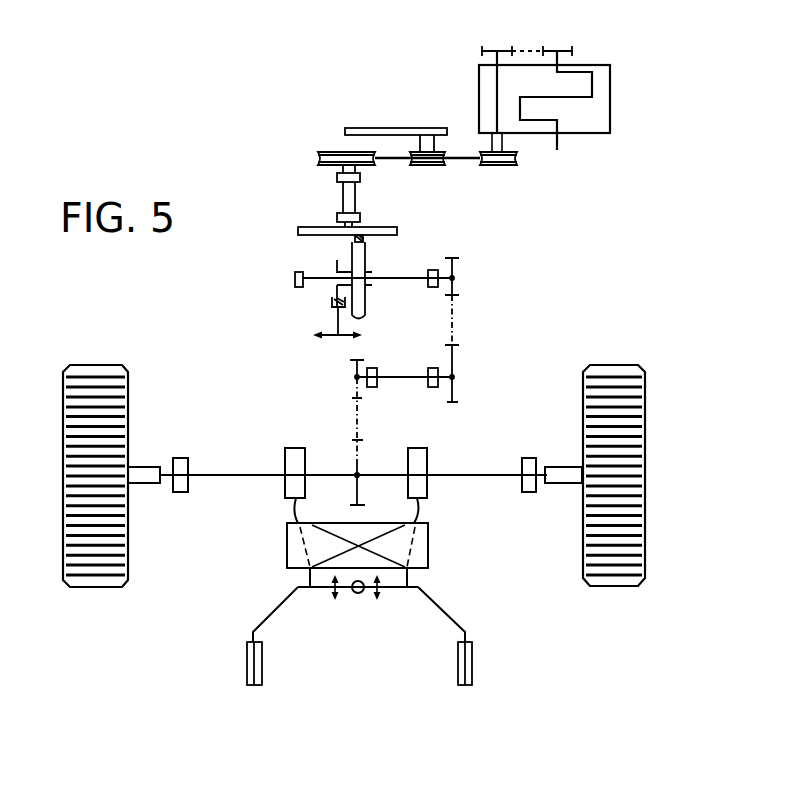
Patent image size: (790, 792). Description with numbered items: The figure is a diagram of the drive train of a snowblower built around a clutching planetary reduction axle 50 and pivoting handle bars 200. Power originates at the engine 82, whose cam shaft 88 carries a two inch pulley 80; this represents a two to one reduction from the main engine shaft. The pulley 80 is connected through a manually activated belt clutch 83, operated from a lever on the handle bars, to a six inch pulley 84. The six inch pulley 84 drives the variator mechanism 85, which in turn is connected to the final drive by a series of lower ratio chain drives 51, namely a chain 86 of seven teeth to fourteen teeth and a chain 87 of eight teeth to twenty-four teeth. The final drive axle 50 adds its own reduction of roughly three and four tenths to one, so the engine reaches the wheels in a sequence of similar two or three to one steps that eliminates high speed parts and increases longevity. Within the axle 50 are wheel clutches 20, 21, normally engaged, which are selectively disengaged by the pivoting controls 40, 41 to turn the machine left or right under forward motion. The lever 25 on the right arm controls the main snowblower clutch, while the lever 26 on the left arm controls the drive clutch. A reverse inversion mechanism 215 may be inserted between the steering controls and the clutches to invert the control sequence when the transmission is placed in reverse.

The wheel clutch 20 is at (294, 447).
The wheel clutch 21 is at (423, 447).
The lever 25 is at (472, 662).
The lever 26 is at (245, 659).
The pivoting control 40 is at (451, 662).
The pivoting control 41 is at (268, 674).
The clutching planetary reduction axle 50 is at (447, 504).
The chain drives 51 is at (484, 289).
The pulley 80 is at (498, 167).
The engine 82 is at (610, 102).
The belt clutch 83 is at (414, 126).
The pulley 84 is at (321, 151).
The variator mechanism 85 is at (310, 243).
The chain 86 is at (453, 310).
The chain 87 is at (357, 409).
The cam shaft 88 is at (494, 50).
The handle bars 200 is at (263, 601).
The reverse inversion mechanism 215 is at (422, 548).